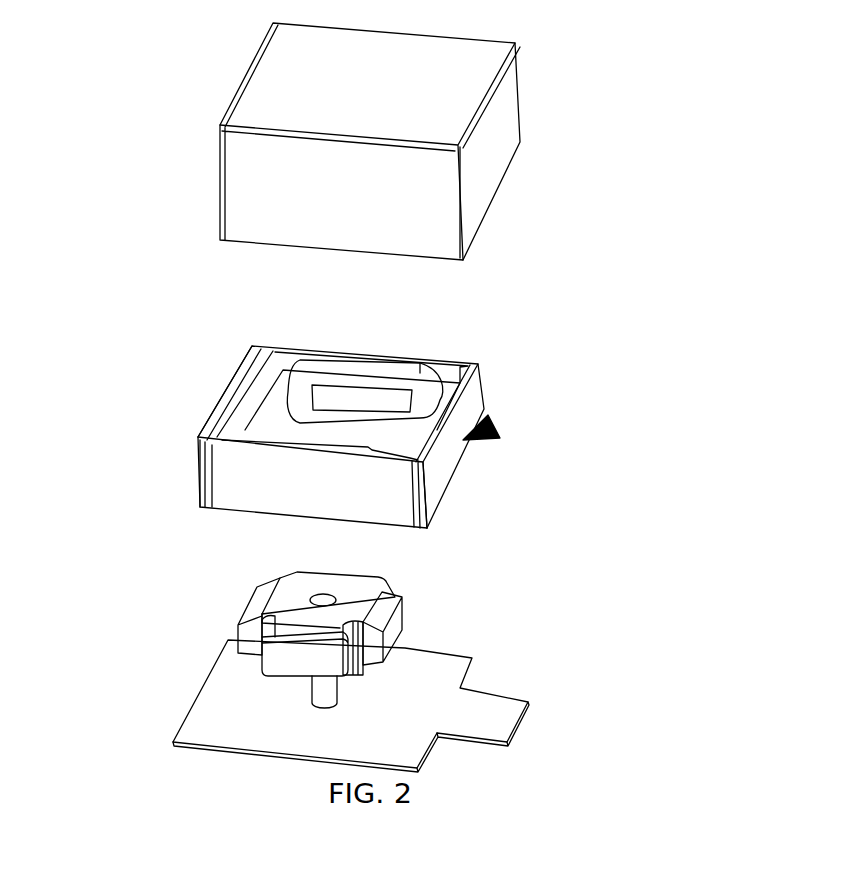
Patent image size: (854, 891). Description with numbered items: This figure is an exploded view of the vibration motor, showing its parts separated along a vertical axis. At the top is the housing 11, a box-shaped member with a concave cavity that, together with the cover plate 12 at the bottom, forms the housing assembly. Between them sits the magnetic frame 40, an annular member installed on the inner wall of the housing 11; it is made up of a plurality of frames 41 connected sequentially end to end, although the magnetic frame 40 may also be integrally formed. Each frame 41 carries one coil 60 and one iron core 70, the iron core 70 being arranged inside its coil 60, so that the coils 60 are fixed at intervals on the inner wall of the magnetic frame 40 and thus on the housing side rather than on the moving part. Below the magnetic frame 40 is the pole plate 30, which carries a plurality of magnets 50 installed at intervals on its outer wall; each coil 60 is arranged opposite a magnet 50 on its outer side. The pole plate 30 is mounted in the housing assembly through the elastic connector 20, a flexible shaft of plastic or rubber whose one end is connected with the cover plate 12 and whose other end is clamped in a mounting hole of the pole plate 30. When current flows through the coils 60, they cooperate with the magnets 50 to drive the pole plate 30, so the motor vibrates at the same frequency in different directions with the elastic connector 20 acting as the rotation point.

The housing 11 is at (497, 172).
The cover plate 12 is at (493, 717).
The elastic connector 20 is at (325, 692).
The pole plate 30 is at (287, 603).
The magnetic frame 40 is at (490, 426).
The frame 41 is at (248, 477).
The magnet 50 is at (397, 618).
The coil 60 is at (420, 368).
The iron core 70 is at (328, 393).